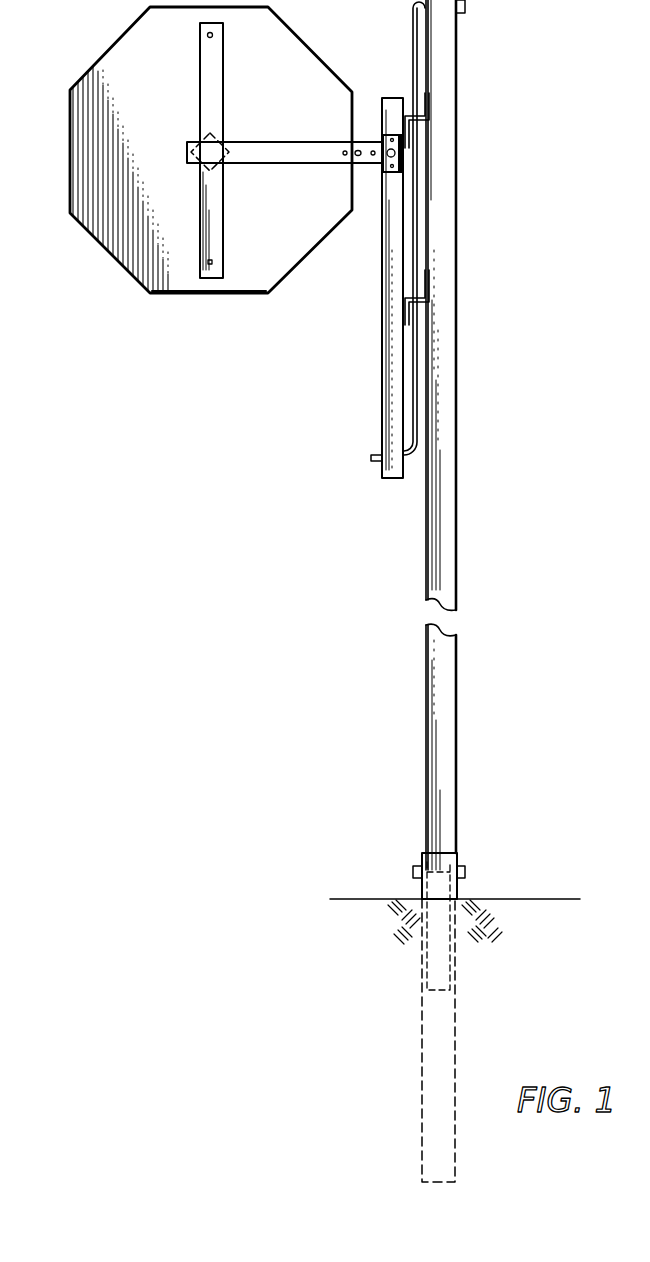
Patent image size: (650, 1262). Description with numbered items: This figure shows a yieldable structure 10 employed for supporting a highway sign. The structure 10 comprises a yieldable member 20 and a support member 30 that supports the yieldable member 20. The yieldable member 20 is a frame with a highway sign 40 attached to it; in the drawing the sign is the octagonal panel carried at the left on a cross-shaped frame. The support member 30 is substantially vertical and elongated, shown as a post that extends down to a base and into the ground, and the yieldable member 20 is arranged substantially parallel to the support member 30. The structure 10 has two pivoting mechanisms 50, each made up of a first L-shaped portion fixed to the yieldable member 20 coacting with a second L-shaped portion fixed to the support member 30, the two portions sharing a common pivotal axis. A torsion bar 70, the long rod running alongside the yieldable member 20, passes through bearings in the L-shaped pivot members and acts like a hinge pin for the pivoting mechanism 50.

The yieldable structure 10 is at (188, 398).
The yieldable member 20 is at (378, 322).
The support member 30 is at (461, 553).
The highway sign 40 is at (158, 300).
The pivoting mechanism 50 is at (432, 126).
The torsion bar 70 is at (420, 229).